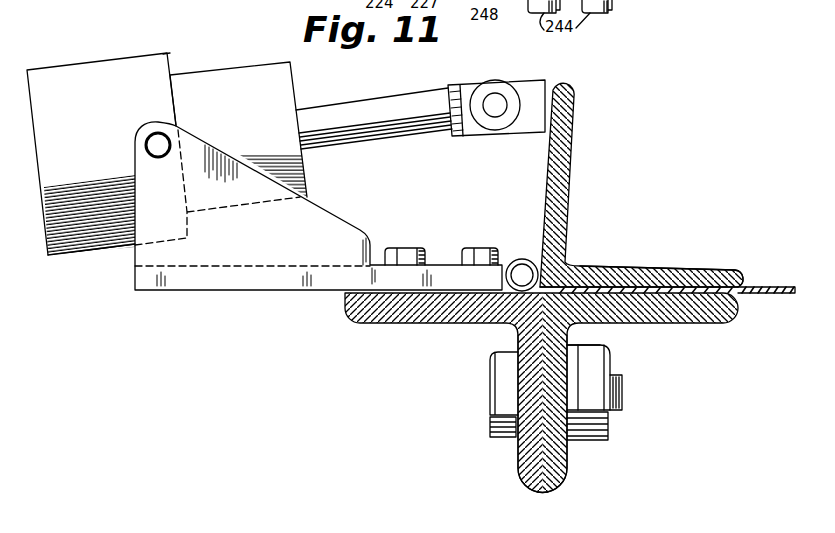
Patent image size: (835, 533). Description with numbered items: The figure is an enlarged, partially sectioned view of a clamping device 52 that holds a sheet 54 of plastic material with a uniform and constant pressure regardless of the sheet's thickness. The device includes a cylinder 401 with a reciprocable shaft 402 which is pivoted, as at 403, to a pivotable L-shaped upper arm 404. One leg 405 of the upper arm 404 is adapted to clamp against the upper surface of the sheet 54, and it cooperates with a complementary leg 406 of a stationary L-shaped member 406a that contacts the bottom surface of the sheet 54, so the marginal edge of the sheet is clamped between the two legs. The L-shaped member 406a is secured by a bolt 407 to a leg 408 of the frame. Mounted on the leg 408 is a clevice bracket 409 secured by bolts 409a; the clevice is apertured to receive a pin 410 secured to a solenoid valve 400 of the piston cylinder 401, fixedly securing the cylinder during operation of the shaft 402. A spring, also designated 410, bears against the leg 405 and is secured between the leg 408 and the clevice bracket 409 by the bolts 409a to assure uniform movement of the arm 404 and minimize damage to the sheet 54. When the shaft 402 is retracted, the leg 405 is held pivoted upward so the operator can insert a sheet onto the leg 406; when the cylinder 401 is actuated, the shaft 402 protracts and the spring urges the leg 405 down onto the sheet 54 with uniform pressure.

The solenoid valve 400 is at (112, 66).
The clamping device 52 is at (150, 56).
The cylinder 401 is at (250, 82).
The reciprocable shaft 402 is at (385, 108).
The pivot 403 is at (497, 99).
The L-shaped upper arm 404 is at (564, 157).
The leg 405 is at (638, 266).
The sheet 54 is at (773, 287).
The leg 406 is at (683, 312).
The stationary L-shaped member 406a is at (568, 340).
The bolt 407 is at (590, 396).
The leg 408 is at (492, 313).
The clevice bracket 409 is at (265, 262).
The bolts 409a is at (472, 248).
The pin 410 is at (158, 145).